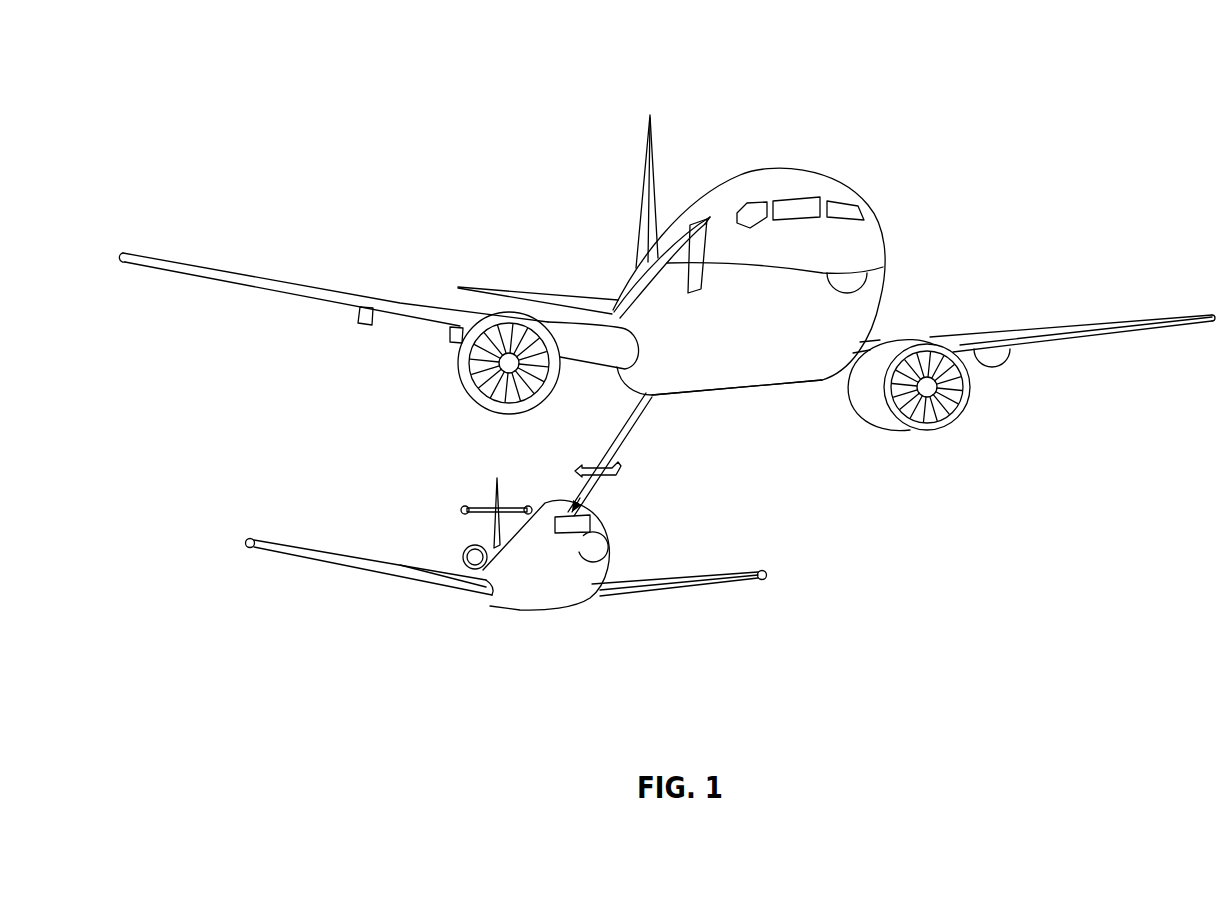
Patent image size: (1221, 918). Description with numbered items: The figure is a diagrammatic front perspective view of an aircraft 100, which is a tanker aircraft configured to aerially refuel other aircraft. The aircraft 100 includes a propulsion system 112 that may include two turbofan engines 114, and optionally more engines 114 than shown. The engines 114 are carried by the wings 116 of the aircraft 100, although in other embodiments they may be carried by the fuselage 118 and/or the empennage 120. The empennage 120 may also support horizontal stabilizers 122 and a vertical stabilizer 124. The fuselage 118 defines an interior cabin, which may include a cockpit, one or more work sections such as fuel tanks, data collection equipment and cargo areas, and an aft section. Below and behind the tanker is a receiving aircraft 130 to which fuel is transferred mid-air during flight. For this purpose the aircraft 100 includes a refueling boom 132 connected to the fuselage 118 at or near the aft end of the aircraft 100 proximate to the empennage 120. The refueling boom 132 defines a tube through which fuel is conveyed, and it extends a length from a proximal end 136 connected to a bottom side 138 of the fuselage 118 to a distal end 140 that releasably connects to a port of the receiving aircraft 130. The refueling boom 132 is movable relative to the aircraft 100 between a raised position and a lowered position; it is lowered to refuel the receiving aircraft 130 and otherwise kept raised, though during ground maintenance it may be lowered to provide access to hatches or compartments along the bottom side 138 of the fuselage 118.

The aircraft 100 is at (392, 54).
The propulsion system 112 is at (1020, 428).
The turbofan engines 114 is at (917, 435).
The wings 116 is at (272, 280).
The fuselage 118 is at (883, 237).
The empennage 120 is at (637, 267).
The horizontal stabilizers 122 is at (500, 287).
The vertical stabilizer 124 is at (646, 157).
The receiving aircraft 130 is at (517, 570).
The refueling boom 132 is at (620, 443).
The proximal end 136 is at (668, 402).
The bottom side 138 is at (738, 357).
The distal end 140 is at (568, 520).